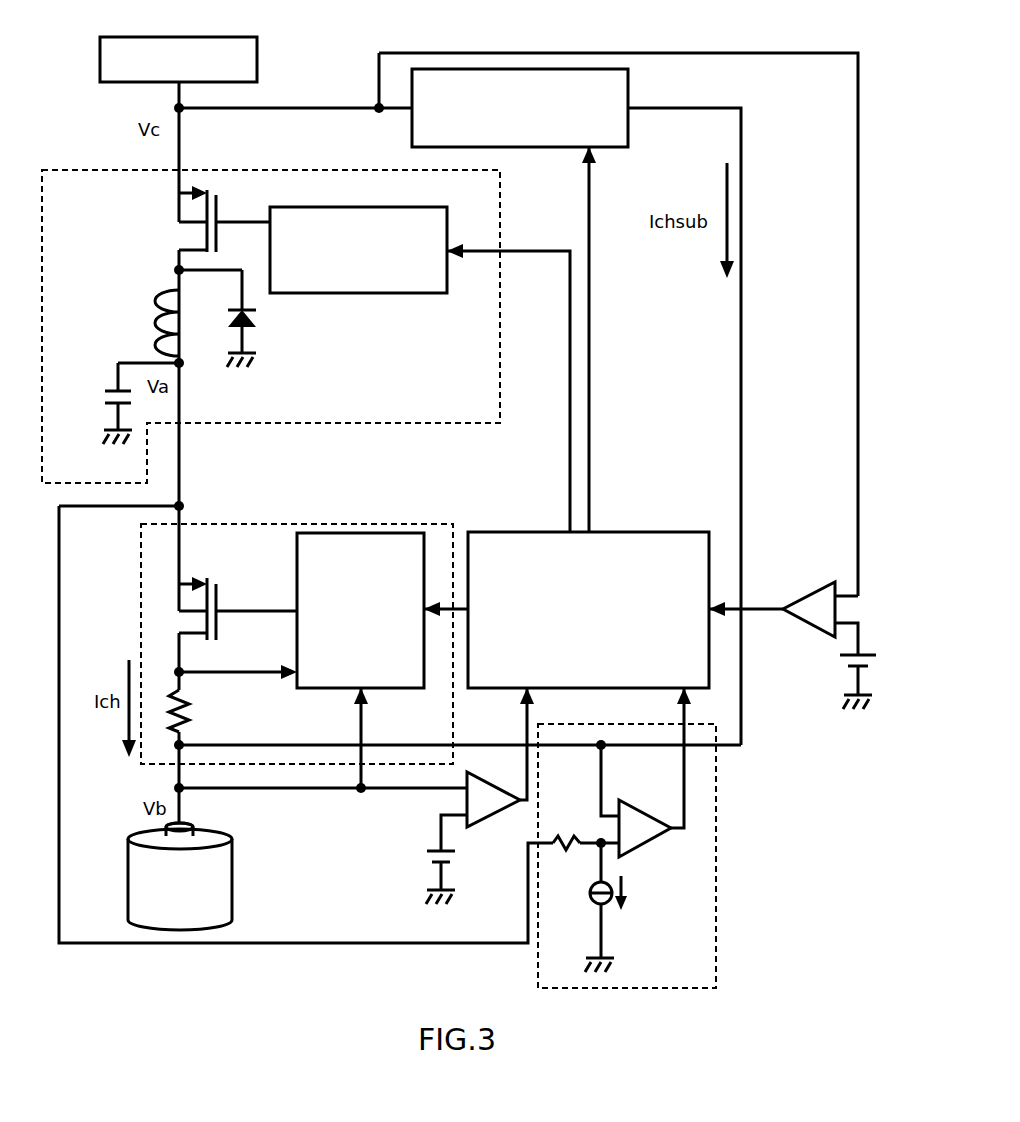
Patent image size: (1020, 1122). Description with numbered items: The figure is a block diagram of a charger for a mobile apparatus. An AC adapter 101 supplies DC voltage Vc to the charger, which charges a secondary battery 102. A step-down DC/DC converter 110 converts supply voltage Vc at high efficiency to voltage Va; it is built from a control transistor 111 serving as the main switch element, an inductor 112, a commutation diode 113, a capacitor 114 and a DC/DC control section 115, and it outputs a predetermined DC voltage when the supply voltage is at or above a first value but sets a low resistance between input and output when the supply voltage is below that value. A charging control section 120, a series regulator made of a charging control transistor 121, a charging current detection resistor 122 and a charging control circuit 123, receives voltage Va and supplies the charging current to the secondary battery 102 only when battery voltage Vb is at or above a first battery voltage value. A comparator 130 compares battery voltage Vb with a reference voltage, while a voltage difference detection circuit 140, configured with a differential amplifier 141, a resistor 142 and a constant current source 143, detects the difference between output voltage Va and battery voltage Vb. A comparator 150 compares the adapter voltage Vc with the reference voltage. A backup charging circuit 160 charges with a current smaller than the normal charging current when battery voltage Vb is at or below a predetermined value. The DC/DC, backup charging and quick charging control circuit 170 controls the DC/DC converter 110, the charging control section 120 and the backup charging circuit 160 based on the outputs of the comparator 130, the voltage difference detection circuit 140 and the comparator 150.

The AC adapter 101 is at (200, 36).
The secondary battery 102 is at (260, 890).
The DC/DC converter 110 is at (501, 212).
The control transistor 111 is at (186, 237).
The inductor 112 is at (155, 302).
The commutation diode 113 is at (252, 325).
The capacitor 114 is at (110, 398).
The DC/DC control section 115 is at (378, 293).
The charging control section 120 is at (412, 518).
The charging control transistor 121 is at (220, 582).
The charging current detection resistor 122 is at (195, 716).
The charging control circuit 123 is at (370, 690).
The comparator 130 is at (480, 818).
The voltage difference detection circuit 140 is at (716, 828).
The differential amplifier 141 is at (646, 848).
The resistor 142 is at (578, 829).
The constant current source 143 is at (593, 895).
The comparator 150 is at (808, 592).
The backup charging circuit 160 is at (608, 150).
The DC/DC, backup charging and quick charging control circuit 170 is at (648, 530).